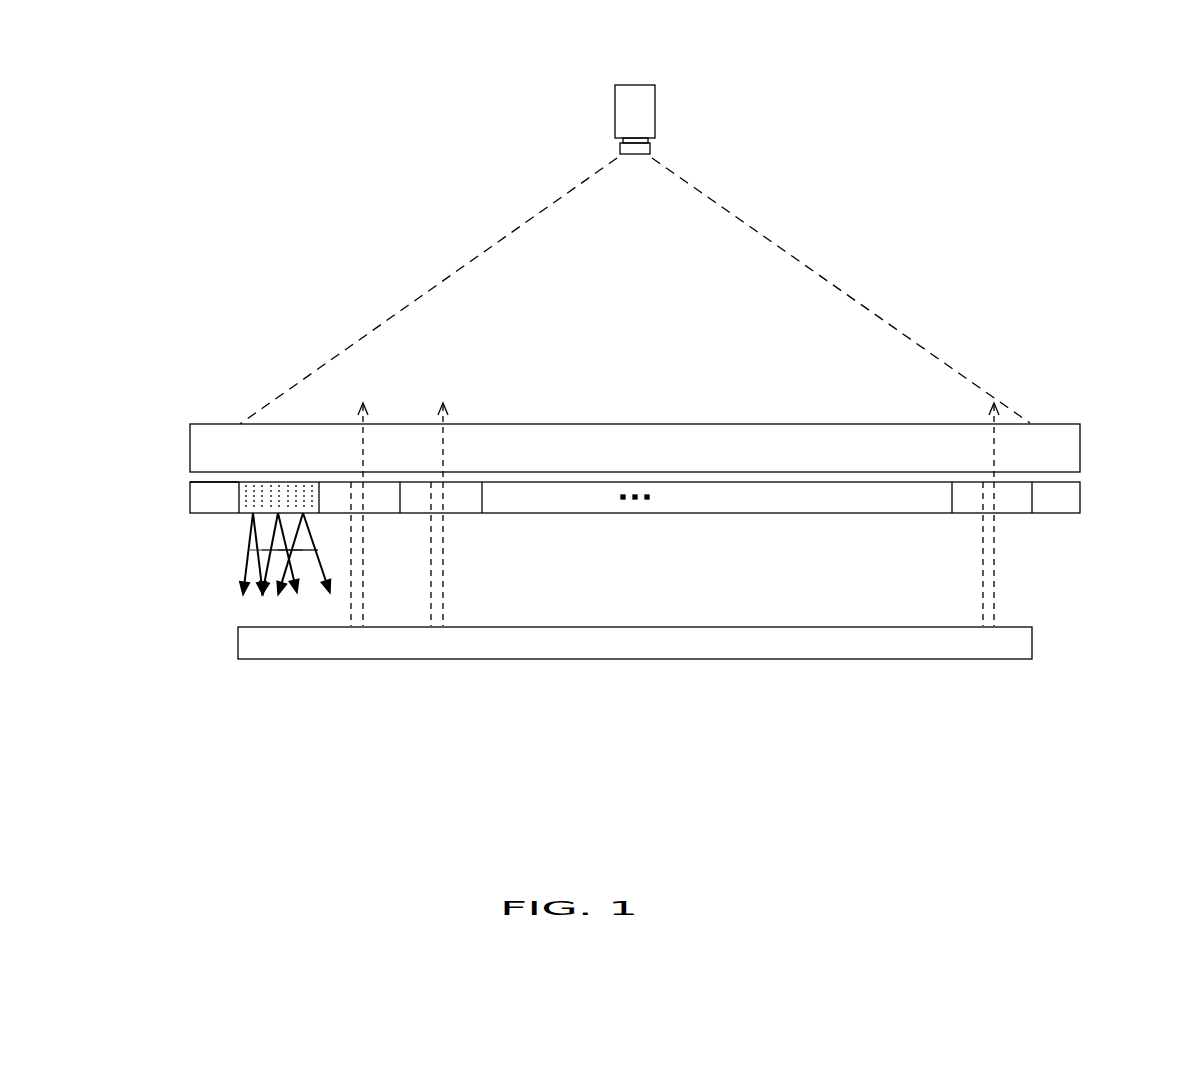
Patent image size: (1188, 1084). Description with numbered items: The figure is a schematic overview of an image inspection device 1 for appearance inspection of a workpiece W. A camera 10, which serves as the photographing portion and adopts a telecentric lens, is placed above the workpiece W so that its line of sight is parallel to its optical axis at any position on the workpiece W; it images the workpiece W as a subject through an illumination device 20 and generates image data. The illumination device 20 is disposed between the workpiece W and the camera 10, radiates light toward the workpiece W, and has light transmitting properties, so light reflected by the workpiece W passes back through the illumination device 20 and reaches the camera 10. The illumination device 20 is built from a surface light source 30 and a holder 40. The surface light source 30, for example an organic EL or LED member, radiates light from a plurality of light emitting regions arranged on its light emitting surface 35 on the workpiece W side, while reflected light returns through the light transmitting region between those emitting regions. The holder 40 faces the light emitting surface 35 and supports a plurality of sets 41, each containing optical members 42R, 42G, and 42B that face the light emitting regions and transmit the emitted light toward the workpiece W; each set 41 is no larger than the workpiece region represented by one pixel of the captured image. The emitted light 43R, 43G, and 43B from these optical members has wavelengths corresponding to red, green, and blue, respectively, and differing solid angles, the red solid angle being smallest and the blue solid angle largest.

The image inspection device 1 is at (975, 190).
The camera 10 is at (650, 112).
The illumination device 20 is at (622, 460).
The surface light source 30 is at (1070, 450).
The light emitting surface 35 is at (212, 473).
The holder 40 is at (601, 460).
The set 41 is at (551, 460).
The optical member 42R is at (252, 487).
The optical member 42G is at (278, 487).
The optical member 42B is at (303, 487).
The emitted light 43R is at (243, 578).
The emitted light 43G is at (300, 578).
The emitted light 43B is at (320, 578).
The workpiece W is at (1022, 645).